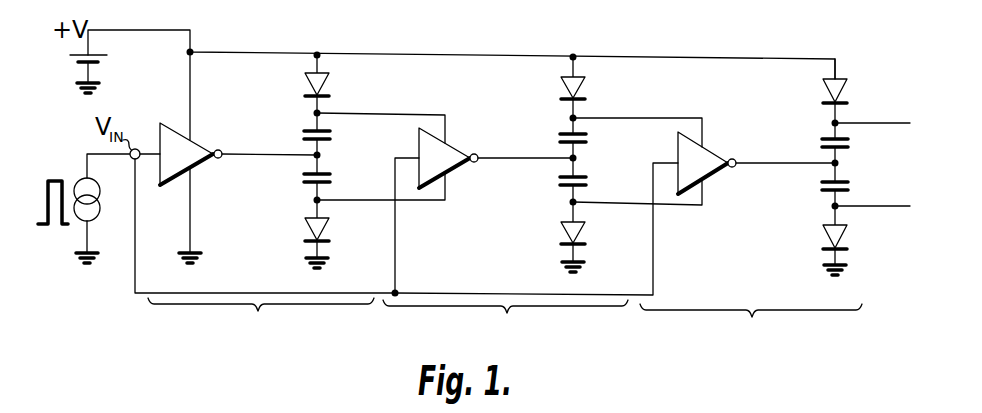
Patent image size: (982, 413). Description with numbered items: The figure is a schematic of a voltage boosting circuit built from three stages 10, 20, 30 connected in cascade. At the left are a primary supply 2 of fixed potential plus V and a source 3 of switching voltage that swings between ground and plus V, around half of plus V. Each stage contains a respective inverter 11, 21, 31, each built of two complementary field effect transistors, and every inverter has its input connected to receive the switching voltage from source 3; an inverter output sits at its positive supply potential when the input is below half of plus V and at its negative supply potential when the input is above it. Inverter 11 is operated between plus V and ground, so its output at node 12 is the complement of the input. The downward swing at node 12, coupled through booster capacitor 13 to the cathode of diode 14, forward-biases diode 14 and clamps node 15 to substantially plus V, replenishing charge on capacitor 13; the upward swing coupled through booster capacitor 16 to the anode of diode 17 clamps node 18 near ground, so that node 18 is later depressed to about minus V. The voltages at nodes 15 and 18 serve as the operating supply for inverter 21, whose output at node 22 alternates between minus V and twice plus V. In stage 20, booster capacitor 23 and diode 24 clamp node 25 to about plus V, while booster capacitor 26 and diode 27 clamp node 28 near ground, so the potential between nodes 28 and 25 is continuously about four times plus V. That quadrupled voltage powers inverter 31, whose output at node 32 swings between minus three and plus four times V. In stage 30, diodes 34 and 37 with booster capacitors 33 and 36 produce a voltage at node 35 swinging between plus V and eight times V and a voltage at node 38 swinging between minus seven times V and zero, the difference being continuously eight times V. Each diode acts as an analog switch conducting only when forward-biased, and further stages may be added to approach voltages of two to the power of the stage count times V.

The primary supply 2 is at (72, 57).
The source of switching voltage 3 is at (102, 217).
The voltage boosting stage 10 is at (261, 323).
The inverter 11 is at (202, 144).
The node 12 is at (322, 157).
The booster capacitor 13 is at (302, 139).
The diode 14 is at (326, 90).
The node 15 is at (310, 116).
The booster capacitor 16 is at (302, 176).
The diode 17 is at (326, 234).
The node 18 is at (306, 202).
The voltage doubling stage 20 is at (505, 325).
The inverter 21 is at (452, 147).
The node 22 is at (578, 160).
The booster capacitor 23 is at (556, 143).
The diode 24 is at (582, 94).
The node 25 is at (564, 121).
The booster capacitor 26 is at (556, 181).
The diode 27 is at (582, 239).
The node 28 is at (560, 207).
The voltage boosting stage 30 is at (751, 330).
The inverter 31 is at (712, 150).
The node 32 is at (840, 165).
The booster capacitor 33 is at (821, 146).
The diode 34 is at (846, 96).
The node 35 is at (829, 124).
The booster capacitor 36 is at (821, 184).
The diode 37 is at (846, 241).
The node 38 is at (825, 212).